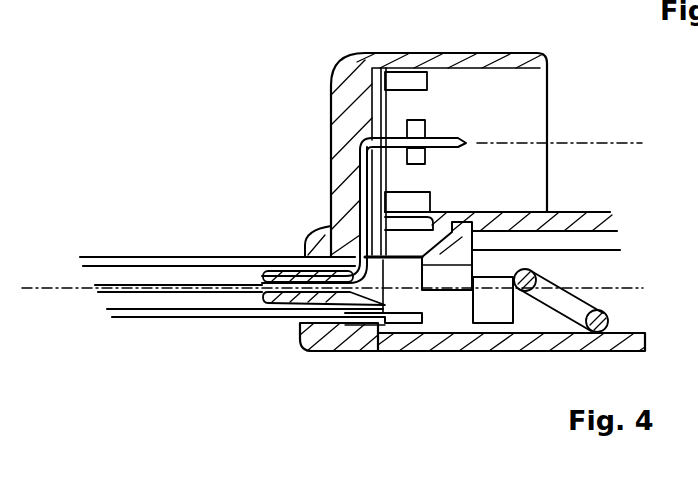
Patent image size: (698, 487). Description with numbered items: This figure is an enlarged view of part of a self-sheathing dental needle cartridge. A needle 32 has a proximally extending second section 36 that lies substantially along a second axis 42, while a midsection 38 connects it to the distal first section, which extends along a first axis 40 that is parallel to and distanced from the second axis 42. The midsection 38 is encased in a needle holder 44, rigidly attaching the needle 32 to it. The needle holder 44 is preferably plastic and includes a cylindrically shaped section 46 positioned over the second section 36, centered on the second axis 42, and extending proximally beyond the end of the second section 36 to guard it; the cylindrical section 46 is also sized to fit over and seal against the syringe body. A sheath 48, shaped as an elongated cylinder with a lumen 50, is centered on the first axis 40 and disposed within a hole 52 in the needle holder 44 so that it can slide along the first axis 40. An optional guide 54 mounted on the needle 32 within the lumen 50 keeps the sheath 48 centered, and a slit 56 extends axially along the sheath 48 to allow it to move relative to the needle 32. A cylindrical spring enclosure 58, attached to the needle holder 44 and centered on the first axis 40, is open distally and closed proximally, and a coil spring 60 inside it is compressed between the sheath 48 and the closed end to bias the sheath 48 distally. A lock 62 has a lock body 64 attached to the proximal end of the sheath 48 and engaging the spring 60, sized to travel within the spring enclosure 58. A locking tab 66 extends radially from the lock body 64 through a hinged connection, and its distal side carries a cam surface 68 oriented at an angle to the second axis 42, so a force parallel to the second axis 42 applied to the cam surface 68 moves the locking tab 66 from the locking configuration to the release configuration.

The needle 32 is at (142, 285).
The second section 36 is at (462, 142).
The midsection 38 is at (358, 200).
The first axis 40 is at (612, 288).
The second axis 42 is at (605, 143).
The needle holder 44 is at (338, 83).
The cylindrically shaped section 46 is at (413, 52).
The sheath 48 is at (240, 323).
The lumen 50 is at (175, 303).
The hole 52 is at (305, 325).
The guide 54 is at (270, 270).
The slit 56 is at (185, 258).
The spring enclosure 58 is at (590, 238).
The coil spring 60 is at (607, 312).
The lock 62 is at (472, 323).
The lock body 64 is at (398, 297).
The locking tab 66 is at (528, 212).
The cam surface 68 is at (432, 243).